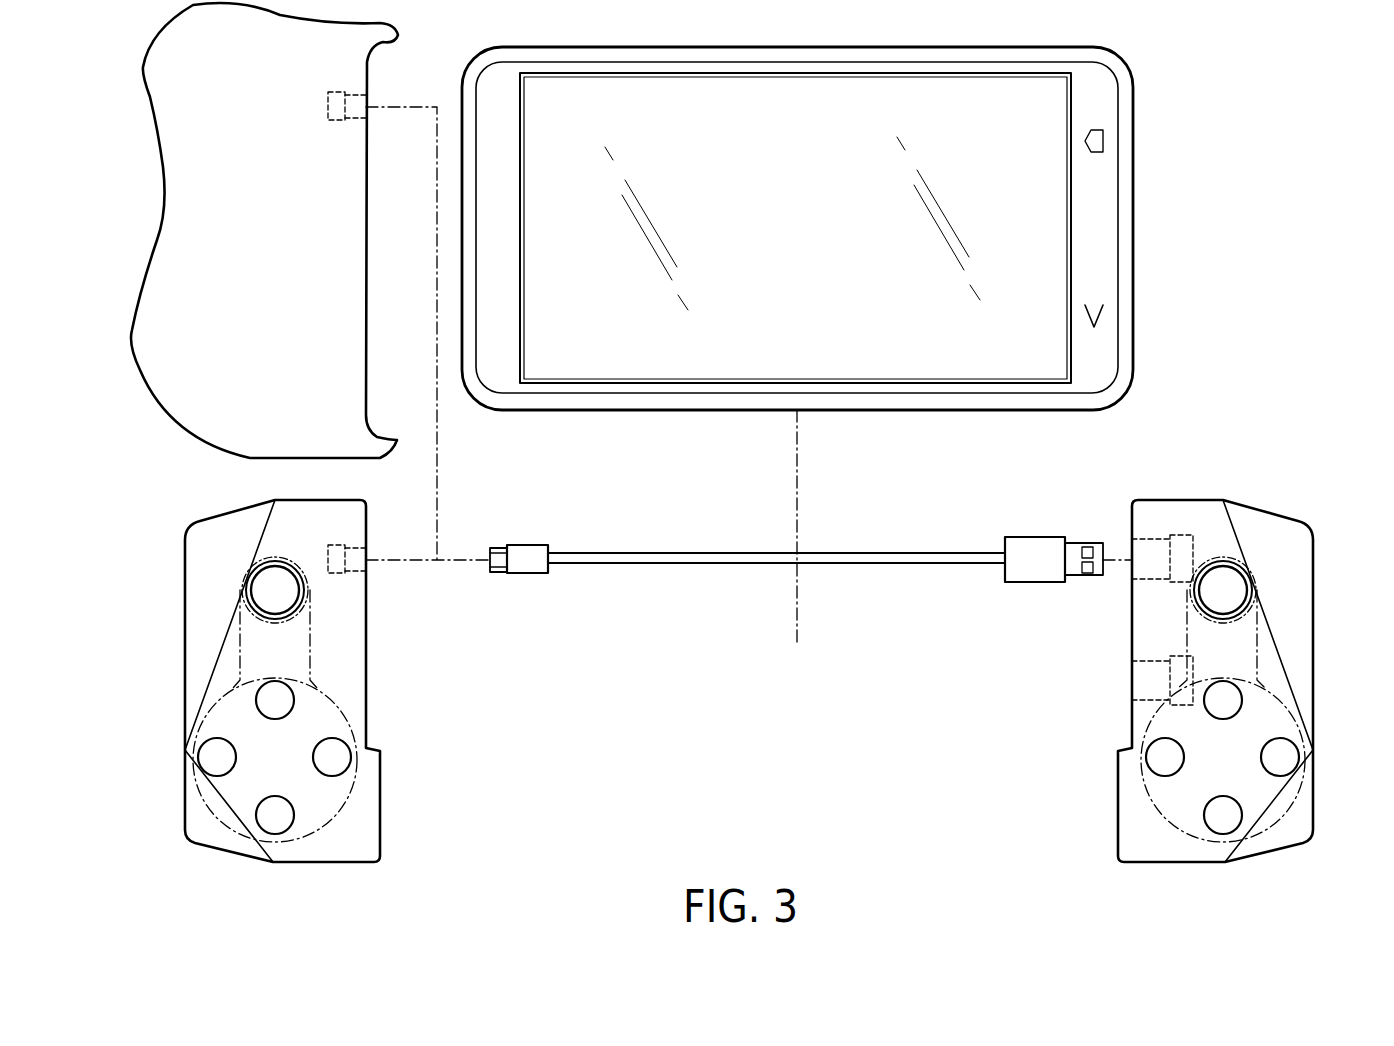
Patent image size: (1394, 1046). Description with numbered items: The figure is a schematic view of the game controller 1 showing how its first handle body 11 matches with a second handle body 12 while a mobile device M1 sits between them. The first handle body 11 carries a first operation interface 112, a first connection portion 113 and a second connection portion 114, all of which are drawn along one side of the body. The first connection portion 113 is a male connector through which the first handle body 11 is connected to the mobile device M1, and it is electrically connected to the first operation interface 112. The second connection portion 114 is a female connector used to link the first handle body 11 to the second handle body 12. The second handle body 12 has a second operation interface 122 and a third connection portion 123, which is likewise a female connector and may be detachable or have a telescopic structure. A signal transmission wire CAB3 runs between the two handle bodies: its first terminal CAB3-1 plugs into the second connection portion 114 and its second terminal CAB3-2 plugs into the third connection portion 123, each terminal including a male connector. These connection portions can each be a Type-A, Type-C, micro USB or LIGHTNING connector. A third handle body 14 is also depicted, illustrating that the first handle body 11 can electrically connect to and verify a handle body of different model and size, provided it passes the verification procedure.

The game controller 1 is at (1227, 490).
The first handle body 11 is at (1220, 660).
The second handle body 12 is at (281, 681).
The third handle body 14 is at (160, 93).
The first operation interface 112 is at (1270, 613).
The first connection portion 113 is at (1132, 680).
The second connection portion 114 is at (1138, 555).
The second operation interface 122 is at (228, 612).
The third connection portion 123 is at (368, 566).
The mobile device M1 is at (1133, 228).
The signal transmission wire CAB3 is at (796, 590).
The first terminal CAB3-1 is at (1032, 567).
The second terminal CAB3-2 is at (532, 567).